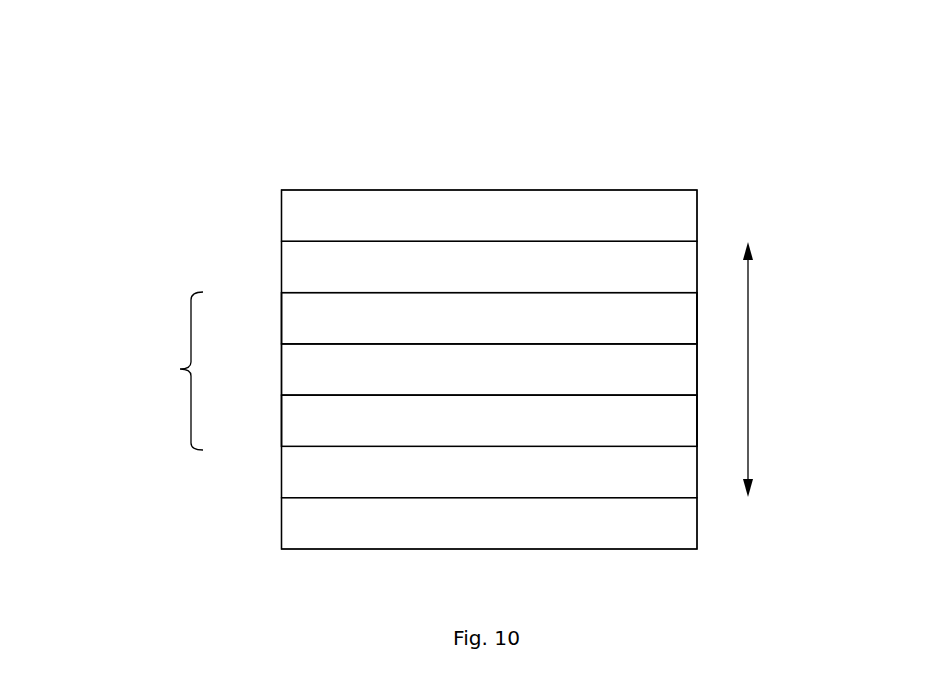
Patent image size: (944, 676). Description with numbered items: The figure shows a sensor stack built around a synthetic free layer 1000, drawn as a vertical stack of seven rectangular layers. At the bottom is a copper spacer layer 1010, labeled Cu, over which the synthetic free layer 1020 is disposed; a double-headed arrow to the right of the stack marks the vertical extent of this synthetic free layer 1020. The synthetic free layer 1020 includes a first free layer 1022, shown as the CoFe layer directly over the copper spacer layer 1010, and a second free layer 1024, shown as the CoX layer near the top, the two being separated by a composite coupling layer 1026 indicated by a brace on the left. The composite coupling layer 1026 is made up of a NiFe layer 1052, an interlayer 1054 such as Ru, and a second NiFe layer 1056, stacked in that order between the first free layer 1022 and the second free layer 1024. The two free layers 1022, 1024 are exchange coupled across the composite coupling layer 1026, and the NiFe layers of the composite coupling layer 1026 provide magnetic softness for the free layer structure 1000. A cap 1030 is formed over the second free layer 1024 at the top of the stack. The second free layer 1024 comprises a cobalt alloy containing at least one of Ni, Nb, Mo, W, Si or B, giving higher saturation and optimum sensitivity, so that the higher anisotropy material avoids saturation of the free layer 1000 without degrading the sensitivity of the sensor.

The synthetic free layer sensor stack 1000 is at (213, 105).
The cap 1030 is at (683, 229).
The second free layer 1024 is at (153, 253).
The composite coupling layer 1026 is at (87, 357).
The second NiFe layer 1056 is at (297, 317).
The interlayer 1054 is at (297, 369).
The NiFe layer 1052 is at (296, 432).
The first free layer 1022 is at (153, 482).
The copper spacer layer 1010 is at (697, 536).
The synthetic free layer 1020 is at (825, 345).